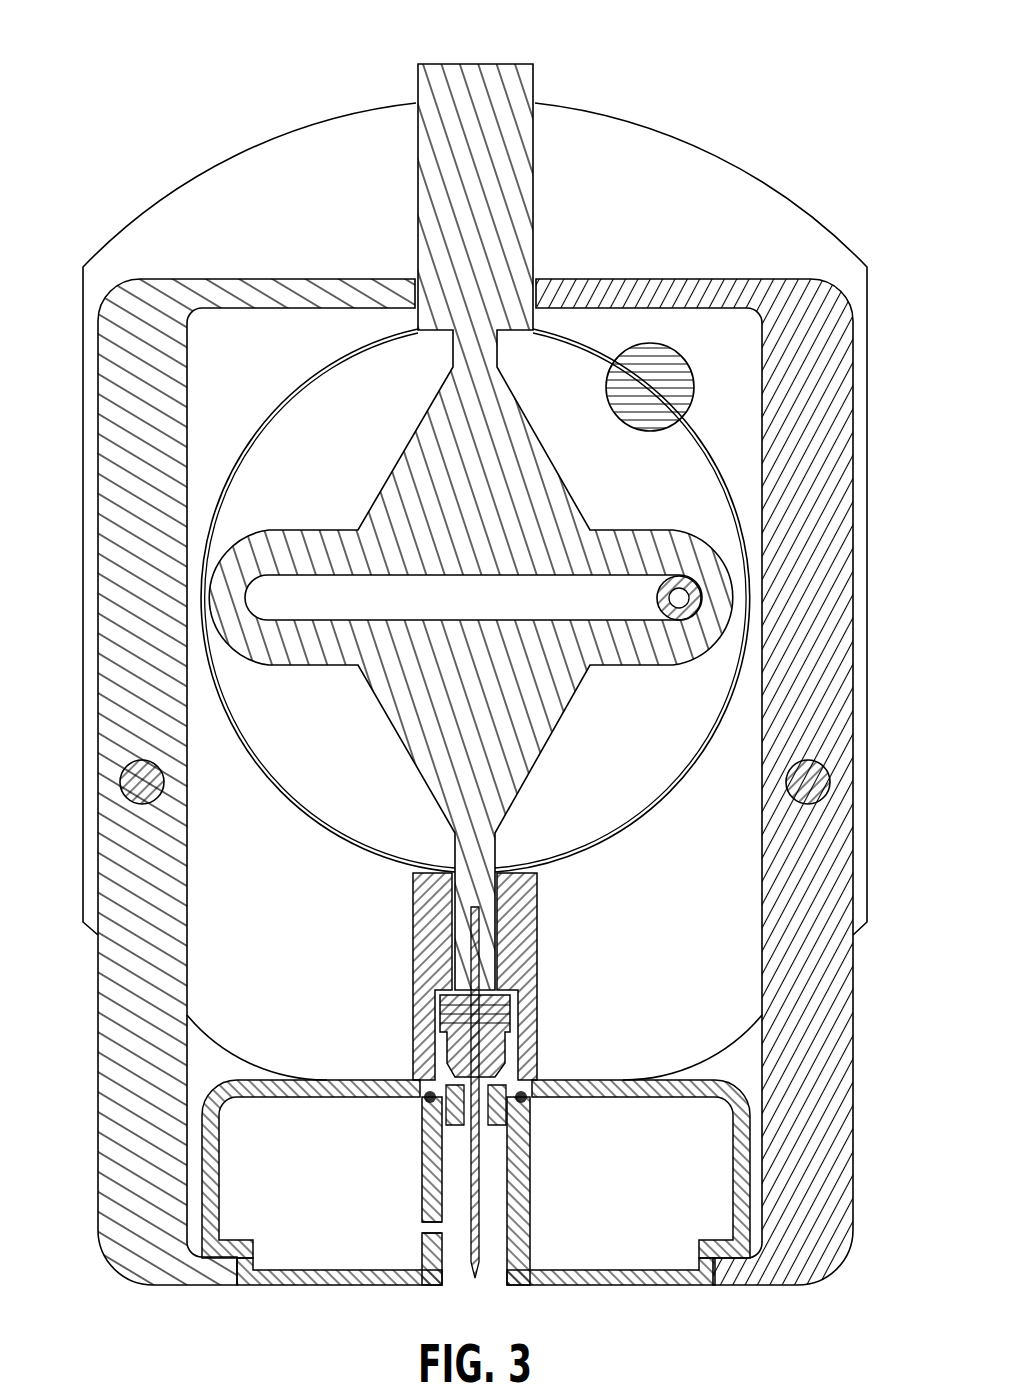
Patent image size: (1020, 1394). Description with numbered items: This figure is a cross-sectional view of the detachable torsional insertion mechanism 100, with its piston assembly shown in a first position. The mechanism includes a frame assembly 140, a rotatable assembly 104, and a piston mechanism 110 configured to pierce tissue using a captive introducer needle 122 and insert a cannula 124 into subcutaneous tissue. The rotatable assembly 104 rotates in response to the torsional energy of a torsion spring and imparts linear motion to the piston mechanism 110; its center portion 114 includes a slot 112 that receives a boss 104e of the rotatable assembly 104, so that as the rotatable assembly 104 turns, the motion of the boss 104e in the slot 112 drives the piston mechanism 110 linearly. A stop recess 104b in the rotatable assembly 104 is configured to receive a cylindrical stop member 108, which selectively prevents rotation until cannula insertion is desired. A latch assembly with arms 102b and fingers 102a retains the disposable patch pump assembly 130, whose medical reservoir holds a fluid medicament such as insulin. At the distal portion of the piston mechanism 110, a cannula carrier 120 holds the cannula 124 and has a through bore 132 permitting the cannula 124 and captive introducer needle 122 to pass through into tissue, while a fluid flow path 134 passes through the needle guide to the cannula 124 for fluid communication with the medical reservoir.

The torsional insertion mechanism 100 is at (116, 150).
The finger 102a is at (218, 1287).
The arm 102b is at (123, 763).
The rotatable assembly 104 is at (563, 527).
The stop recess 104b is at (612, 420).
The boss 104e is at (690, 590).
The stop member 108 is at (658, 373).
The piston mechanism 110 is at (563, 500).
The slot 112 is at (622, 577).
The center portion 114 is at (712, 660).
The cannula carrier 120 is at (508, 1013).
The captive introducer needle 122 is at (470, 940).
The cannula 124 is at (480, 1200).
The disposable patch pump assembly 130 is at (750, 1118).
The through bore 132 is at (500, 1280).
The fluid flow path 134 is at (423, 1228).
The frame assembly 140 is at (215, 163).